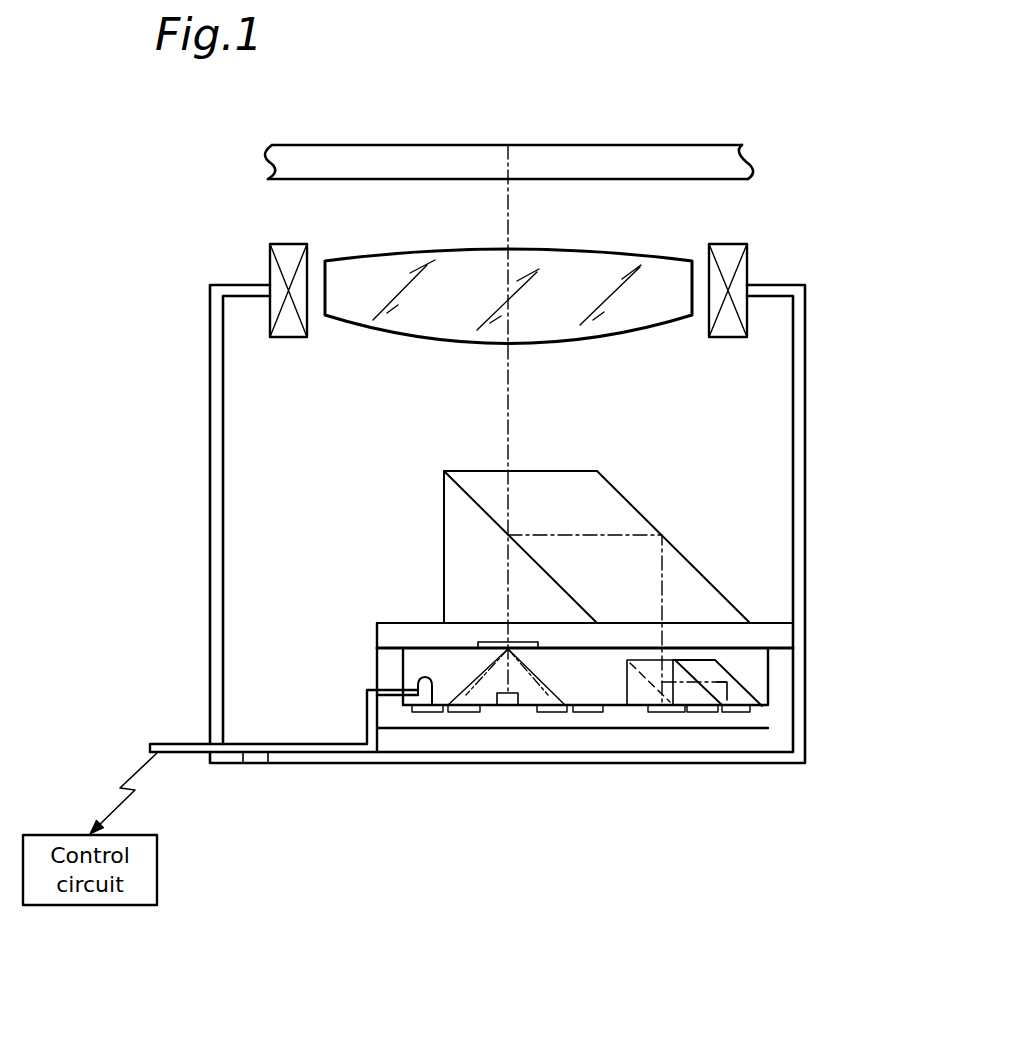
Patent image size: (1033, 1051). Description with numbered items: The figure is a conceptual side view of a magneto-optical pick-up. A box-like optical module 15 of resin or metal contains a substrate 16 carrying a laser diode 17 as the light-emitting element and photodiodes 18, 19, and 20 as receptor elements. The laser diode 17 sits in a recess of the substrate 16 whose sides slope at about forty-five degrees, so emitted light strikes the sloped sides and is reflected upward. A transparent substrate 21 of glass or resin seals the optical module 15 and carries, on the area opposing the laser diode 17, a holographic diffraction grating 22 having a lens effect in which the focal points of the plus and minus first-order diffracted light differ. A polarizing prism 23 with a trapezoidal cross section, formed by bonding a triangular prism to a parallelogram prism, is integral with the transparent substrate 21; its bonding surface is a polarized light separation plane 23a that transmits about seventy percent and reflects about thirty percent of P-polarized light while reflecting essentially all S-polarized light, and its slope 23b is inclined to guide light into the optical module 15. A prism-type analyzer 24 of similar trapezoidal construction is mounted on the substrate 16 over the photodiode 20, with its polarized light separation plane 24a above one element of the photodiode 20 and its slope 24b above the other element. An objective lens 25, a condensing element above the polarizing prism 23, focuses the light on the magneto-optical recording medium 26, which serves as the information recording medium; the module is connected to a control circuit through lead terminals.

The optical module 15 is at (377, 657).
The substrate 16 is at (412, 720).
The laser diode 17 is at (510, 702).
The photodiode 18 is at (447, 713).
The photodiode 19 is at (567, 712).
The photodiode 20 is at (703, 715).
The transparent substrate 21 is at (377, 627).
The holographic diffraction grating 22 is at (480, 645).
The polarizing prism 23 is at (561, 525).
The polarized light separation plane 23a is at (485, 515).
The slope 23b is at (710, 582).
The prism-type analyzer 24 is at (741, 737).
The polarized light separation plane 24a is at (655, 668).
The slope 24b is at (733, 693).
The objective lens 25 is at (387, 323).
The magneto-optical recording medium 26 is at (717, 170).